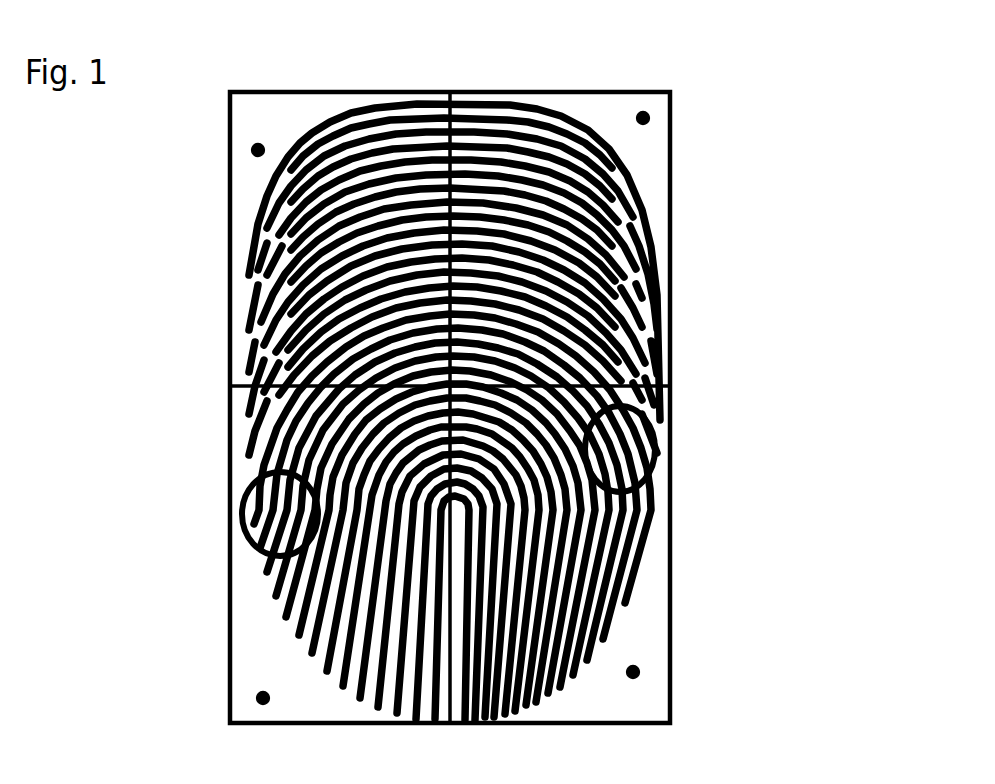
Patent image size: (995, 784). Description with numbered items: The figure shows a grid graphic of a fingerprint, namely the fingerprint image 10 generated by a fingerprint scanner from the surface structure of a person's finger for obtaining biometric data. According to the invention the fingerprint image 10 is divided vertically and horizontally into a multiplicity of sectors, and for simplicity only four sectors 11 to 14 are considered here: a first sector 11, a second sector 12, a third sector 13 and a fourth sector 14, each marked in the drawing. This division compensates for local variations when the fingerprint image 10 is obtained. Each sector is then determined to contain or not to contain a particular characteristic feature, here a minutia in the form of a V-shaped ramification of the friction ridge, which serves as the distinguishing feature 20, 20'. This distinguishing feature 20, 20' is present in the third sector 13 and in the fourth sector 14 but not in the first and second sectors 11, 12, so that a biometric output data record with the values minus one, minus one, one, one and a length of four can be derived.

The fingerprint image 10 is at (686, 402).
The first sector 11 is at (258, 150).
The second sector 12 is at (643, 118).
The third sector 13 is at (263, 698).
The fourth sector 14 is at (633, 672).
The distinguishing feature 20 is at (200, 514).
The distinguishing feature 20' is at (697, 480).